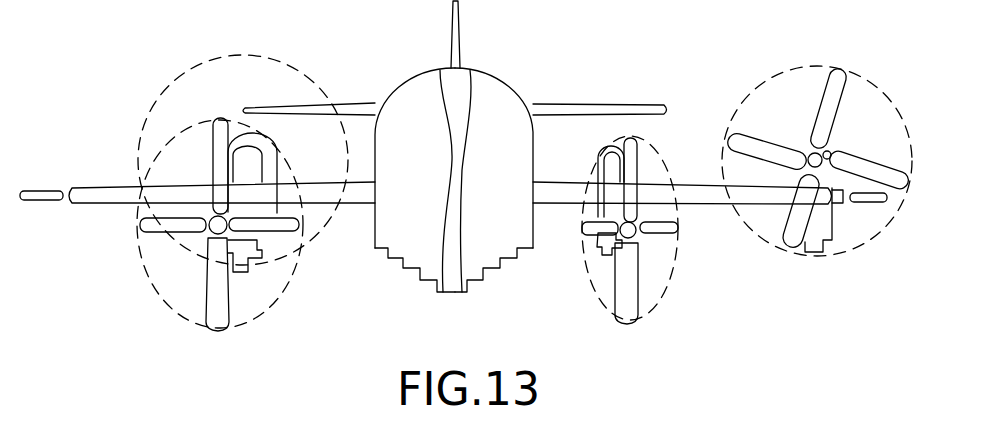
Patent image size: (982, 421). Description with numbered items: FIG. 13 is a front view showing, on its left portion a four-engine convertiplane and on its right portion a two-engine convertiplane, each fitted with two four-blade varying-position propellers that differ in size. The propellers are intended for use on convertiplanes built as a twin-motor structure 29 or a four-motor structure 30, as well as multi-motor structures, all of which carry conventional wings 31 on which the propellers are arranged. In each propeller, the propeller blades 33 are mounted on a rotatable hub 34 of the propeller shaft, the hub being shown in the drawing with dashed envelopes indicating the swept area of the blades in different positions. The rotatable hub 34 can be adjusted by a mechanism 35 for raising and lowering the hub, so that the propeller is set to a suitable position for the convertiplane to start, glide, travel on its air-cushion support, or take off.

The twin-motor structure 29 is at (394, 235).
The four-motor structure 30 is at (498, 240).
The conventional wing 31 is at (562, 193).
The propeller blade 33 is at (215, 288).
The rotatable hub 34 is at (207, 265).
The mechanism for raising and lowering 35 is at (235, 242).